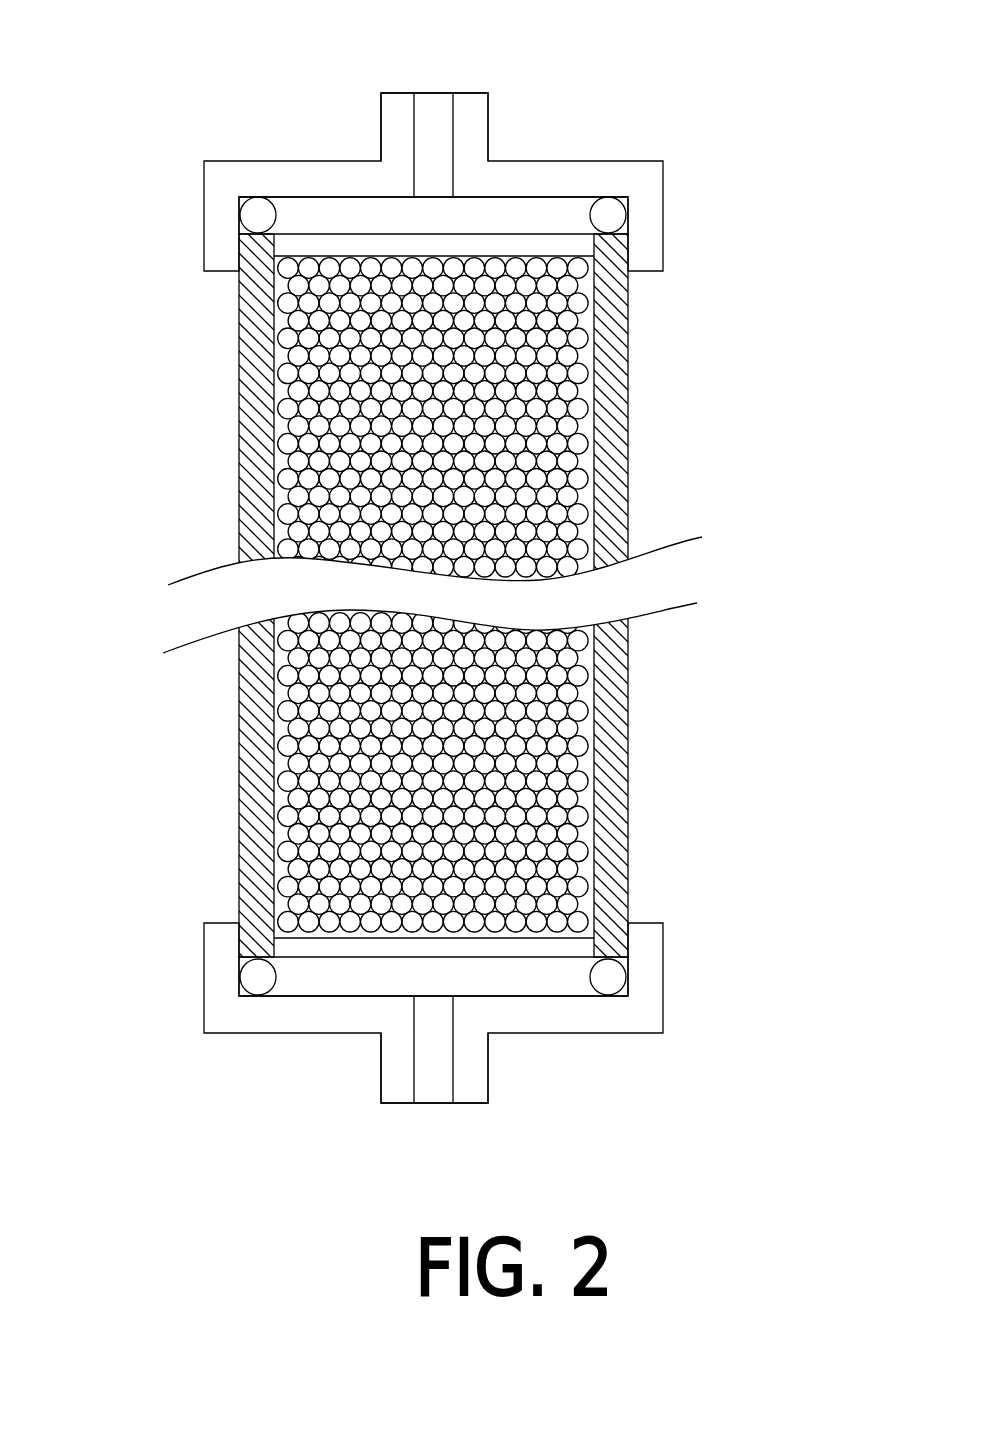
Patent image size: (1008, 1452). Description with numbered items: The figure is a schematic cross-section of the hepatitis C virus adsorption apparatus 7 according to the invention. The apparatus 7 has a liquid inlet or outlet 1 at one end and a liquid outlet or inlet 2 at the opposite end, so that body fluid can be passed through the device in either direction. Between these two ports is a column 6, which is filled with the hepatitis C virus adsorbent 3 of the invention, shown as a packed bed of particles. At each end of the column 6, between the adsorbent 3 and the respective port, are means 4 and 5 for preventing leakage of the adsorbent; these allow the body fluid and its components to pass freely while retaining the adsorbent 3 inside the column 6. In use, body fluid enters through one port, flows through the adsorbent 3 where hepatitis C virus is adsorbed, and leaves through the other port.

The outlet 1 is at (458, 1130).
The inlet 2 is at (470, 57).
The adsorbent 3 is at (563, 373).
The means for preventing leakage of the adsorbent 4 is at (515, 979).
The means for preventing leakage of the adsorbent 5 is at (558, 220).
The column 6 is at (630, 460).
The apparatus 7 is at (685, 683).